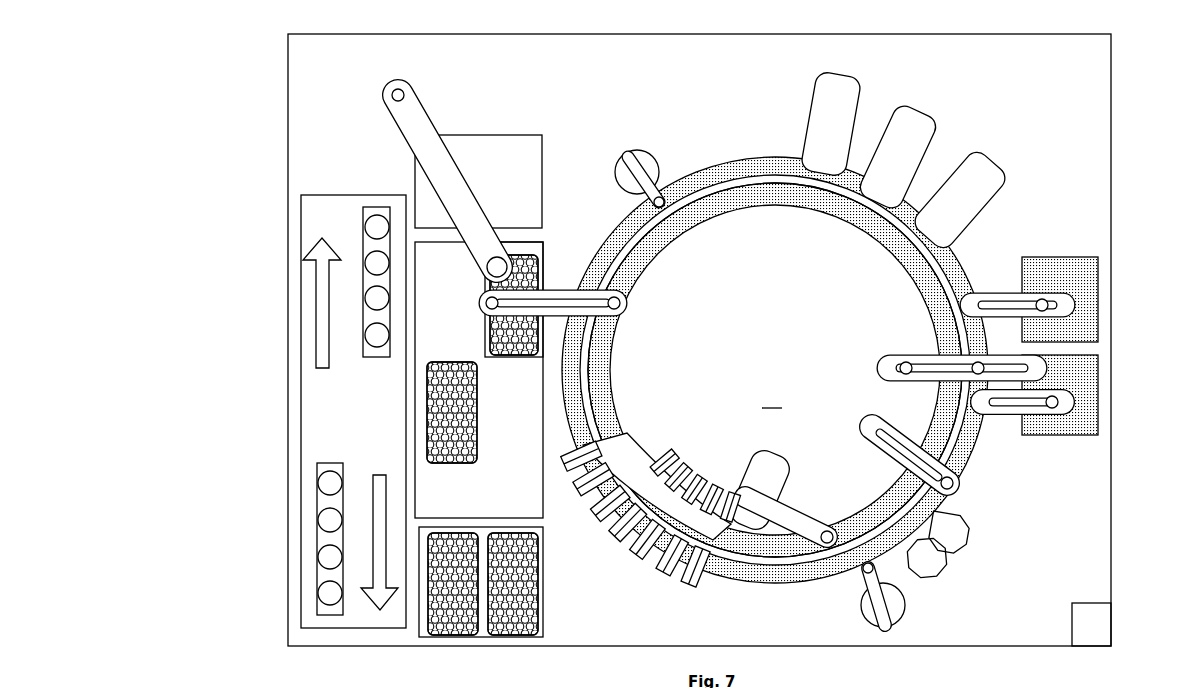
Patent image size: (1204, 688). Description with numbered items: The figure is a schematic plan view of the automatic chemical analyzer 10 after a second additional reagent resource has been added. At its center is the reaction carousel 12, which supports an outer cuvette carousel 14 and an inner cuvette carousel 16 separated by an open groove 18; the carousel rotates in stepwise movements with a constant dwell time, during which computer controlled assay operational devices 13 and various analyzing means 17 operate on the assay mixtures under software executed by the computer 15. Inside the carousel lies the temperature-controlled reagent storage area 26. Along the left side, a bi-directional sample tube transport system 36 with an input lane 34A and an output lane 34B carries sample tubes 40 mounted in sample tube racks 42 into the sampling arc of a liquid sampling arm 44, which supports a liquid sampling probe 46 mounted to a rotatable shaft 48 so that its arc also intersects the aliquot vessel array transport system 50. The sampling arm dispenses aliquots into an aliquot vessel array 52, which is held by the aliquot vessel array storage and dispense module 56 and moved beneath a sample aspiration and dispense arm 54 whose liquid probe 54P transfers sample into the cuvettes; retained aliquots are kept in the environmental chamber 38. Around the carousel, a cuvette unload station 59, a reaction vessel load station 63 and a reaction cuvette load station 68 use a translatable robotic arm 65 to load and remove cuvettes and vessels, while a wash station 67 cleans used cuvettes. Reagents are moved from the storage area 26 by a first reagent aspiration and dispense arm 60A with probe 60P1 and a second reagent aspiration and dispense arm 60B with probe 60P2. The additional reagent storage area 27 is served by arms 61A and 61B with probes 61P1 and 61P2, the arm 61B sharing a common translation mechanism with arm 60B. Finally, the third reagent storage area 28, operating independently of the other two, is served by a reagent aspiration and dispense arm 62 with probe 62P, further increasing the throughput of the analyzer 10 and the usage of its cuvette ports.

The automatic chemical analyzer 10 is at (284, 45).
The reaction carousel 12 is at (775, 316).
The assay operational devices 13 is at (957, 561).
The outer cuvette carousel 14 is at (738, 165).
The computer 15 is at (1091, 624).
The inner cuvette carousel 16 is at (776, 192).
The analyzing means 17 is at (866, 92).
The open groove 18 is at (726, 188).
The reagent storage area 26 is at (772, 400).
The additional reagent storage area 27 is at (1102, 388).
The third reagent storage area 28 is at (1090, 255).
The input lane 34A is at (322, 316).
The output lane 34B is at (380, 508).
The sample tube transport system 36 is at (306, 490).
The environmental chamber 38 is at (489, 141).
The sample tubes 40 is at (330, 485).
The sample tube racks 42 is at (348, 615).
The liquid sampling arm 44 is at (434, 128).
The liquid sampling probe 46 is at (501, 256).
The rotatable shaft 48 is at (410, 82).
The aliquot vessel array transport system 50 is at (430, 260).
The aliquot vessel array 52 is at (531, 253).
The sample aspiration and dispense arm 54 is at (567, 294).
The liquid probe 54P is at (617, 308).
The aliquot vessel array storage and dispense module 56 is at (548, 633).
The cuvette unload station 59 is at (642, 150).
The first reagent aspiration and dispense arm 60A is at (858, 428).
The second reagent aspiration and dispense arm 60B is at (872, 368).
The first liquid reagent probe 60P1 is at (950, 487).
The second liquid reagent probe 60P2 is at (902, 362).
The additional reagent aspiration and dispense arm 61A is at (1080, 415).
The additional reagent aspiration and dispense arm 61B is at (1050, 367).
The reagent probe 61P1 is at (1053, 408).
The reagent probe 61P2 is at (994, 371).
The reagent aspiration and dispense arm 62 is at (985, 292).
The probe 62P is at (1043, 300).
The reaction vessel load station 63 is at (763, 462).
The translatable robotic arm 65 is at (826, 545).
The wash station 67 is at (712, 545).
The reaction cuvette load station 68 is at (905, 603).